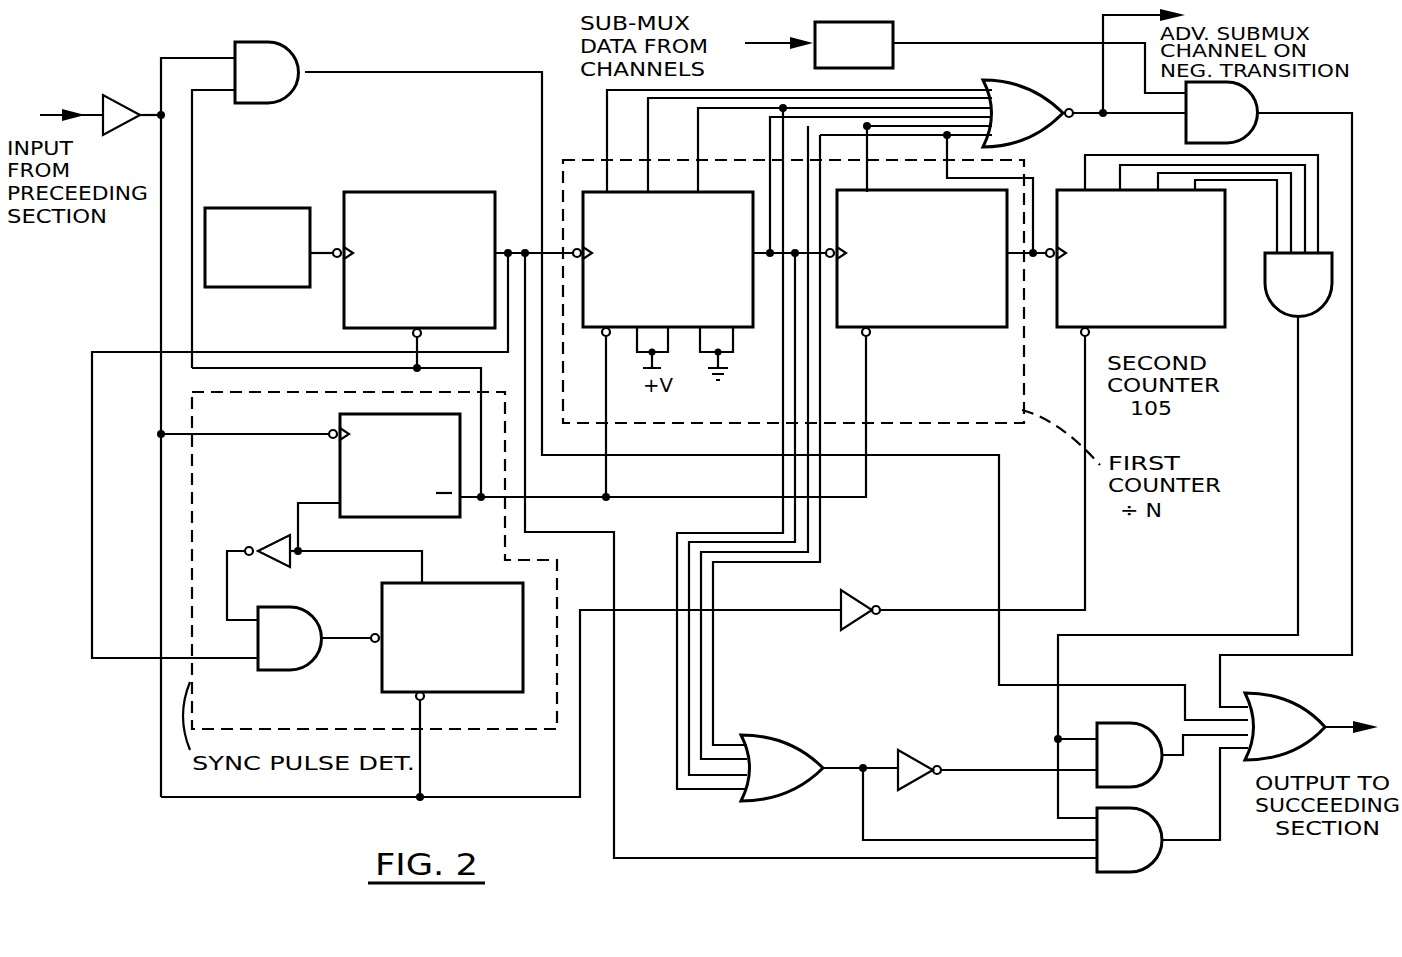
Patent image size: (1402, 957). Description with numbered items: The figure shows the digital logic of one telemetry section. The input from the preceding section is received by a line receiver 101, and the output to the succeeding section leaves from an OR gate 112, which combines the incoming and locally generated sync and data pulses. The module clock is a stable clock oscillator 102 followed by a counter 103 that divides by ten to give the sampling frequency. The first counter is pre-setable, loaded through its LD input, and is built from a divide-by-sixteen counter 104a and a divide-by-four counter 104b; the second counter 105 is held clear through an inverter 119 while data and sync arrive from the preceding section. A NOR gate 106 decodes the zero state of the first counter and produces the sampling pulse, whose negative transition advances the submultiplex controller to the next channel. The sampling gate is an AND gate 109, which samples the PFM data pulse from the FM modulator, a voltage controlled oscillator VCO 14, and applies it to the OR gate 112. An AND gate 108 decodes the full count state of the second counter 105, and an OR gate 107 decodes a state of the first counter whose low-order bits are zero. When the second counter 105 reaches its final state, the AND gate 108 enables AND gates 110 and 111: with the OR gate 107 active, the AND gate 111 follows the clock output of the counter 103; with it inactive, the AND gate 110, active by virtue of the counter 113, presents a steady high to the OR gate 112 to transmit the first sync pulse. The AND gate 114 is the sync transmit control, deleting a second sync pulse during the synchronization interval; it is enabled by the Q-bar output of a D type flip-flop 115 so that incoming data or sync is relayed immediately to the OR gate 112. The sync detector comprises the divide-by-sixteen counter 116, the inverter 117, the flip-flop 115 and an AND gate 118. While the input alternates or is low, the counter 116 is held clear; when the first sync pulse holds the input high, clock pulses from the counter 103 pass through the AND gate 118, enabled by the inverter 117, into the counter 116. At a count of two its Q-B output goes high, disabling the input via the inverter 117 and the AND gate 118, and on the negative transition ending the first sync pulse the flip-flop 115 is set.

The line receiver 101 is at (122, 96).
The stable clock oscillator 102 is at (250, 208).
The counter 103 is at (412, 192).
The divide by 16 counter 104a is at (750, 330).
The divide by 4 counter 104b is at (935, 330).
The second counter 105 is at (1150, 352).
The NOR gate 106 is at (1045, 86).
The OR gate 107 is at (773, 735).
The AND gate 108 is at (1305, 317).
The AND gate 109 is at (1253, 128).
The AND gate 110 is at (1123, 723).
The AND gate 111 is at (1152, 866).
The OR gate 112 is at (1290, 696).
The counter 113 is at (908, 748).
The AND gate 114 is at (303, 86).
The D type flip-flop 115 is at (340, 463).
The counter 116 is at (483, 583).
The inverter 117 is at (275, 537).
The AND gate 118 is at (292, 607).
The inverter 119 is at (857, 588).
The VCO 14 is at (895, 58).